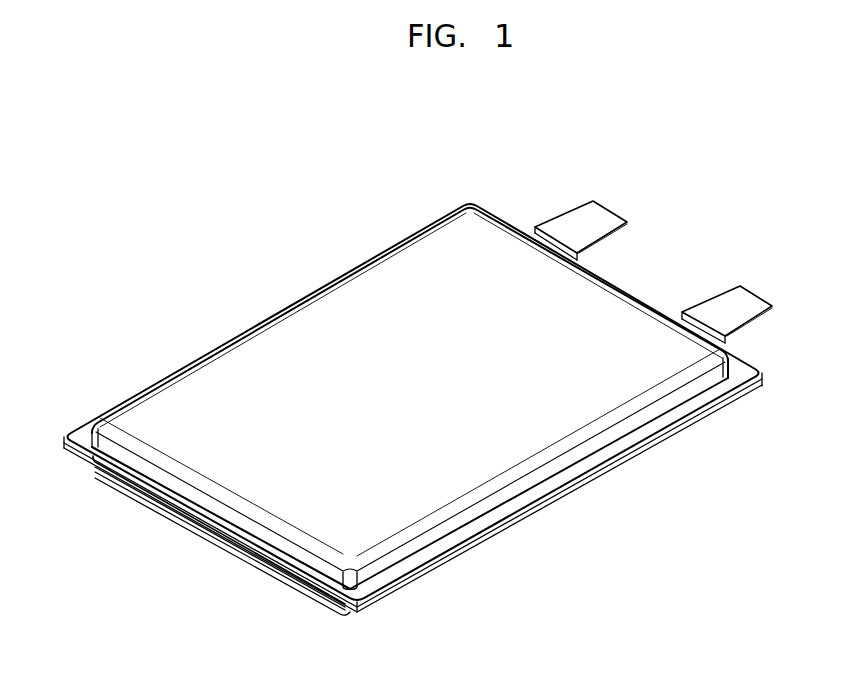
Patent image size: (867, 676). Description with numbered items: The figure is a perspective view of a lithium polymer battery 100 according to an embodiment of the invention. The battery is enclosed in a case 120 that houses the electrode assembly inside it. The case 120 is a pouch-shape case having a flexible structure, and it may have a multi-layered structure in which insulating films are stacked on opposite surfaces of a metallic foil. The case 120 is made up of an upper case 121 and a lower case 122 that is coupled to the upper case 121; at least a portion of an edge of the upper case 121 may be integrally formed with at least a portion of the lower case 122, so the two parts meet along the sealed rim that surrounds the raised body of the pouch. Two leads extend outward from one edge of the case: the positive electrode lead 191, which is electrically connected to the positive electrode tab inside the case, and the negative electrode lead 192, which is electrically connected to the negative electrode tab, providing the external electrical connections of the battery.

The lithium polymer battery 100 is at (200, 266).
The case 120 is at (147, 527).
The upper case 121 is at (292, 337).
The lower case 122 is at (327, 603).
The positive electrode lead 191 is at (578, 220).
The negative electrode lead 192 is at (742, 303).